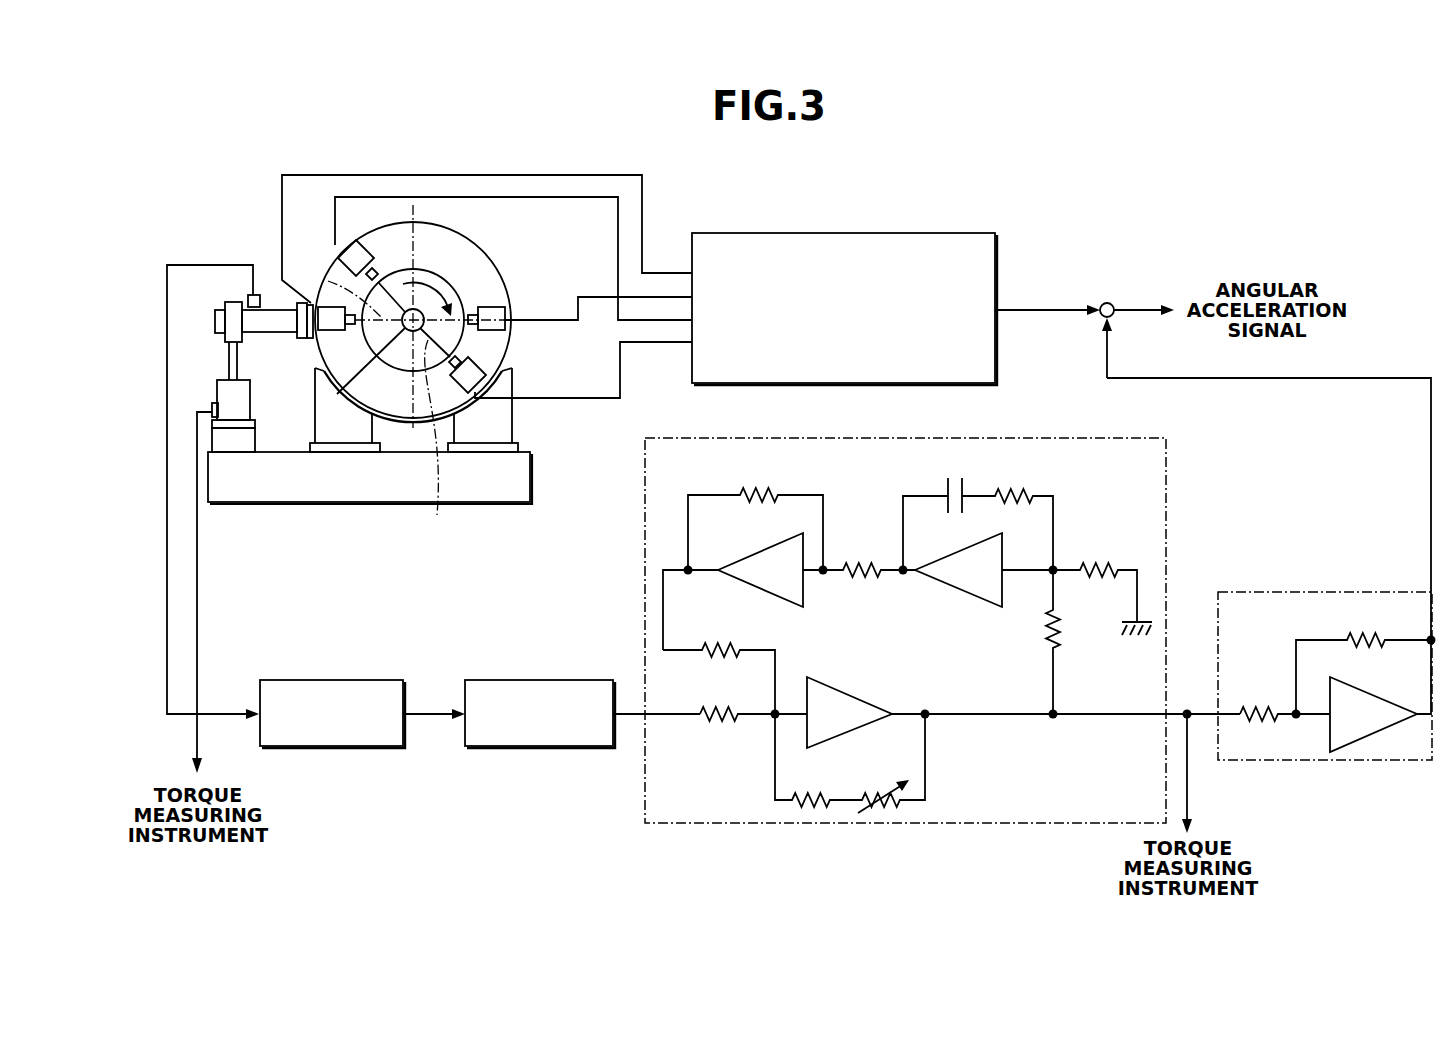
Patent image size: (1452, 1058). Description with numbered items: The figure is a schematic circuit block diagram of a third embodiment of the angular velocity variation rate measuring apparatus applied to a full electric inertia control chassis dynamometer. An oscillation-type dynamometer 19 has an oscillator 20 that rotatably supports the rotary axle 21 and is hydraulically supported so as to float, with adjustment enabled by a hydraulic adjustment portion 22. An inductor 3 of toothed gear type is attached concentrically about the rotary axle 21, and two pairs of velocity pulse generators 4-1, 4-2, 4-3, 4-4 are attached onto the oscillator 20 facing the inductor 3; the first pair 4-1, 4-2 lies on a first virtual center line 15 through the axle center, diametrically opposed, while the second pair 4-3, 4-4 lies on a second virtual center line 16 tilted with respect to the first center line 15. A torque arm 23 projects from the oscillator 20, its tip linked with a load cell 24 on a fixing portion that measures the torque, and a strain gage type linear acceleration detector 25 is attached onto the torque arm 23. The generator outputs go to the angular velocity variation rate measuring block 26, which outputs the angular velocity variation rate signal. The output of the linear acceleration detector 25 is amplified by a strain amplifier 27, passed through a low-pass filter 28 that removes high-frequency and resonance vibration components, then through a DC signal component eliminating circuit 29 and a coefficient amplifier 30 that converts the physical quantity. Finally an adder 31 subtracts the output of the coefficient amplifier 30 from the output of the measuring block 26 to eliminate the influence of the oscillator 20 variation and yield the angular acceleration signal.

The inductor 3 is at (440, 291).
The first velocity pulse generator 4-1 is at (500, 308).
The first velocity pulse generator 4-2 is at (337, 328).
The second velocity pulse generator 4-3 is at (498, 368).
The second velocity pulse generator 4-4 is at (365, 252).
The first virtual center line 15 is at (330, 281).
The second virtual center line 16 is at (426, 441).
The oscillation-type dynamometer 19 is at (530, 474).
The oscillator 20 is at (465, 232).
The rotary axle 21 is at (337, 394).
The hydraulic adjustment portion 22 is at (513, 431).
The torque arm 23 is at (277, 313).
The load cell 24 is at (217, 392).
The linear acceleration detector 25 is at (247, 297).
The angular velocity variation rate measuring block 26 is at (893, 233).
The strain amplifier 27 is at (355, 680).
The low-pass filter 28 is at (530, 680).
The DC signal component eliminating circuit 29 is at (1168, 510).
The coefficient amplifier 30 is at (1293, 592).
The adder 31 is at (1106, 303).